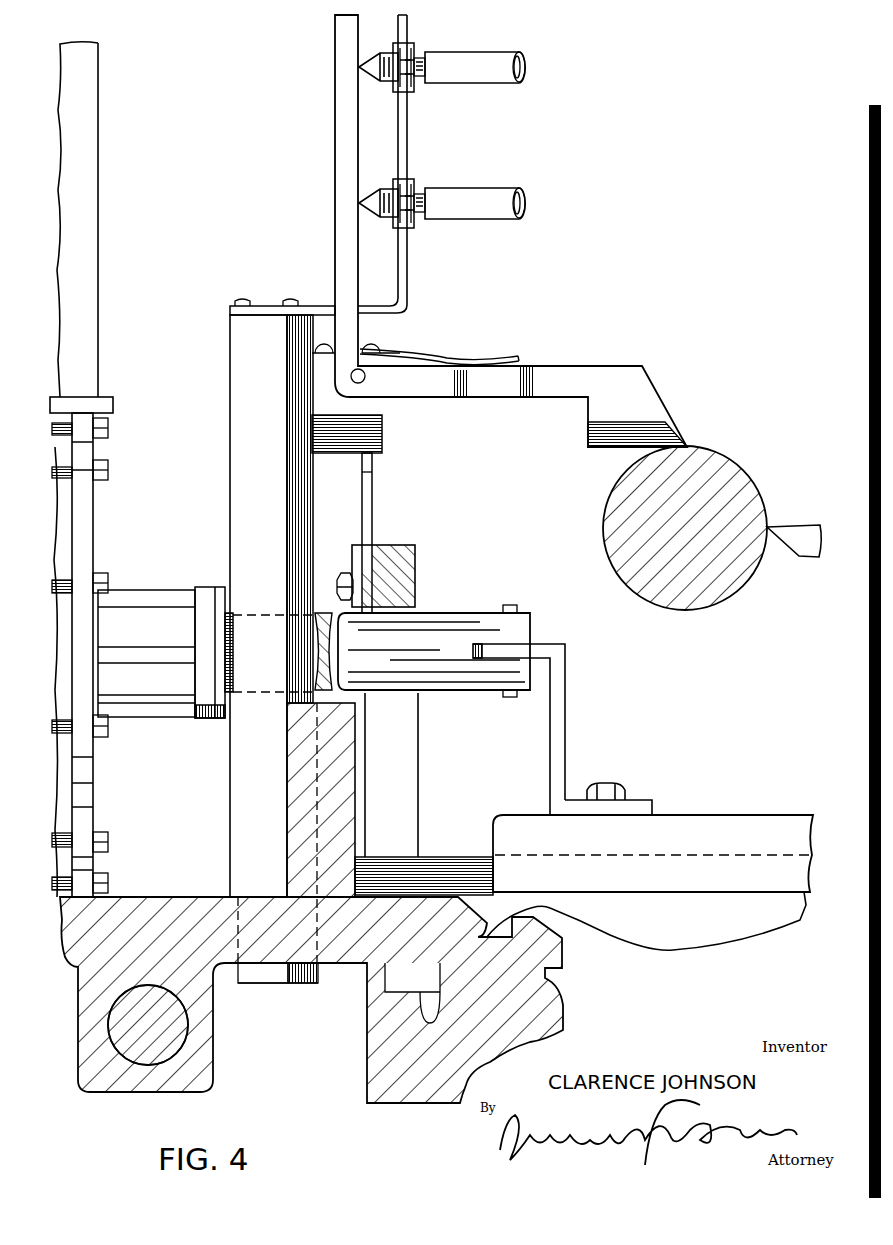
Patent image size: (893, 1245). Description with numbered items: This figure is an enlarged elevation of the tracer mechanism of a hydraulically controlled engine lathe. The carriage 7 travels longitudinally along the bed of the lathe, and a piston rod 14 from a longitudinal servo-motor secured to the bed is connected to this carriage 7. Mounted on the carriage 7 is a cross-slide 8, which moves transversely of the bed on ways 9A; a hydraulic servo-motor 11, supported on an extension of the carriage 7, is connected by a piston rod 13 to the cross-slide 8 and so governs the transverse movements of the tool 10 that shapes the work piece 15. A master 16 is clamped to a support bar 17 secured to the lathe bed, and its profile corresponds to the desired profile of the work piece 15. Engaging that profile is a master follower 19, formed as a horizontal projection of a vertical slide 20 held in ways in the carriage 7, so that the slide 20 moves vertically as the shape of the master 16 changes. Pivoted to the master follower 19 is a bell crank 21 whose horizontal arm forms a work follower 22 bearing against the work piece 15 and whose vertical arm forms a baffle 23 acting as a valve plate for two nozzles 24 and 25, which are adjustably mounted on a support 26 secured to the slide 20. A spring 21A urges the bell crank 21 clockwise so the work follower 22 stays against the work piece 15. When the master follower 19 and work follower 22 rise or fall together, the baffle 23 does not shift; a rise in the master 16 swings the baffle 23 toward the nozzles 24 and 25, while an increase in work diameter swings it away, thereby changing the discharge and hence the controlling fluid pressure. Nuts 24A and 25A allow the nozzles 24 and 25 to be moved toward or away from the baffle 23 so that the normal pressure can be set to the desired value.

The carriage 7 is at (337, 965).
The cross-slide 8 is at (722, 815).
The ways 9A is at (433, 856).
The tool 10 is at (788, 525).
The hydraulic servo-motor 11 is at (124, 527).
The piston rod 13 is at (460, 613).
The piston rod 14 is at (185, 1027).
The work piece 15 is at (735, 462).
The master 16 is at (373, 507).
The support bar 17 is at (405, 545).
The master follower 19 is at (374, 454).
The vertical slide 20 is at (230, 460).
The bell crank 21 is at (380, 373).
The spring 21A is at (452, 358).
The work follower 22 is at (677, 421).
The baffle 23 is at (333, 108).
The nozzle 24 is at (369, 58).
The nut 24A is at (409, 45).
The nozzle 25 is at (369, 195).
The nut 25A is at (410, 186).
The support 26 is at (410, 144).